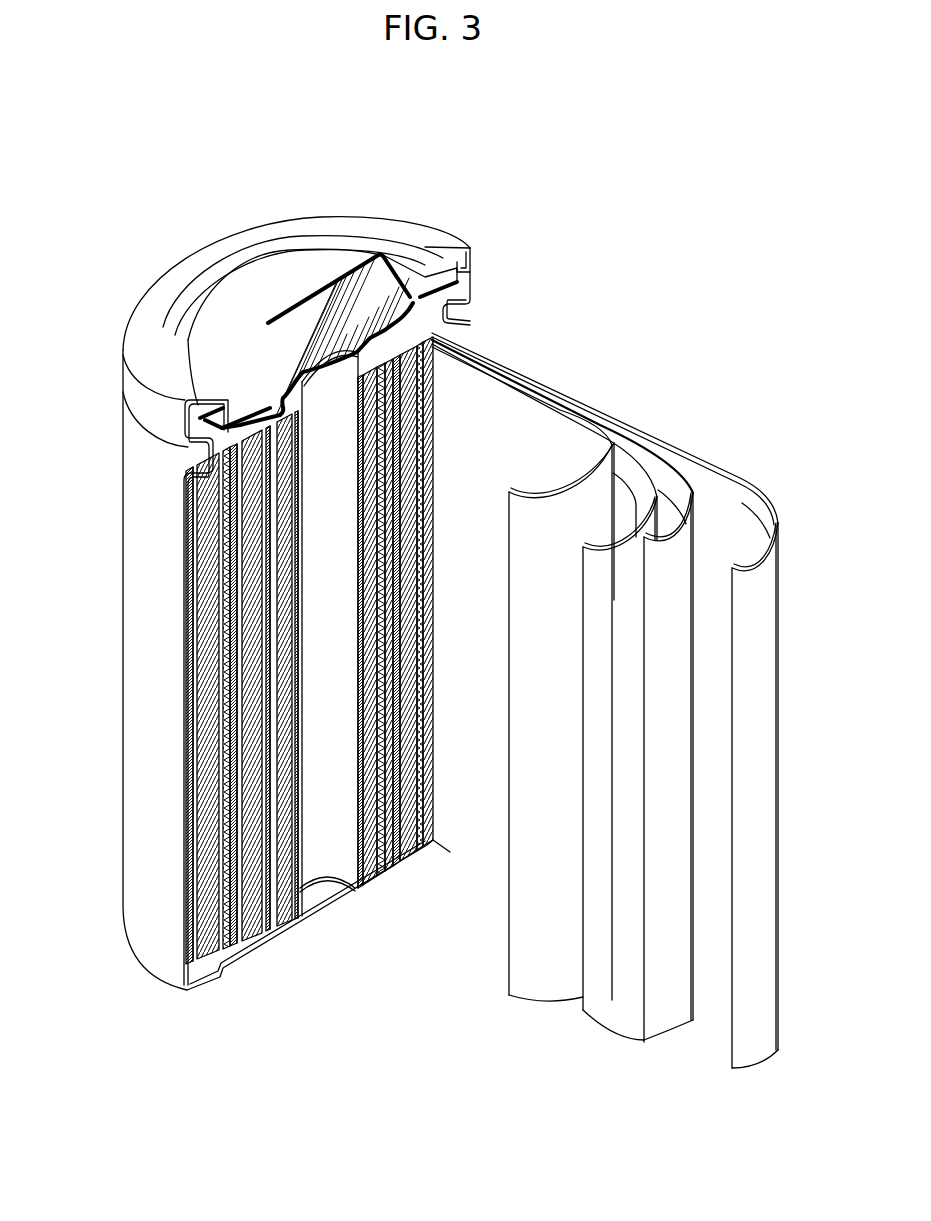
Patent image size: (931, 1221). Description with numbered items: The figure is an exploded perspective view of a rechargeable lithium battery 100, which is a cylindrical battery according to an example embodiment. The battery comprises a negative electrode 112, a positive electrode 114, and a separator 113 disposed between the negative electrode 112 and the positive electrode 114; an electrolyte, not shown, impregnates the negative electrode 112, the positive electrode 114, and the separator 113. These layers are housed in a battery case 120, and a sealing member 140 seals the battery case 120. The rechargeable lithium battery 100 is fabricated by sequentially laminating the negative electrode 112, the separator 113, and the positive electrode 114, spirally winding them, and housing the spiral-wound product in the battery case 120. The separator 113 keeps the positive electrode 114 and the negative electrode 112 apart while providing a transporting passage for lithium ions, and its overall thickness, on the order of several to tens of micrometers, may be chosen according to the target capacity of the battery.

The rechargeable lithium battery 100 is at (548, 212).
The negative electrode 112 is at (742, 510).
The separator 113 is at (551, 430).
The positive electrode 114 is at (624, 460).
The battery case 120 is at (132, 683).
The sealing member 140 is at (310, 250).